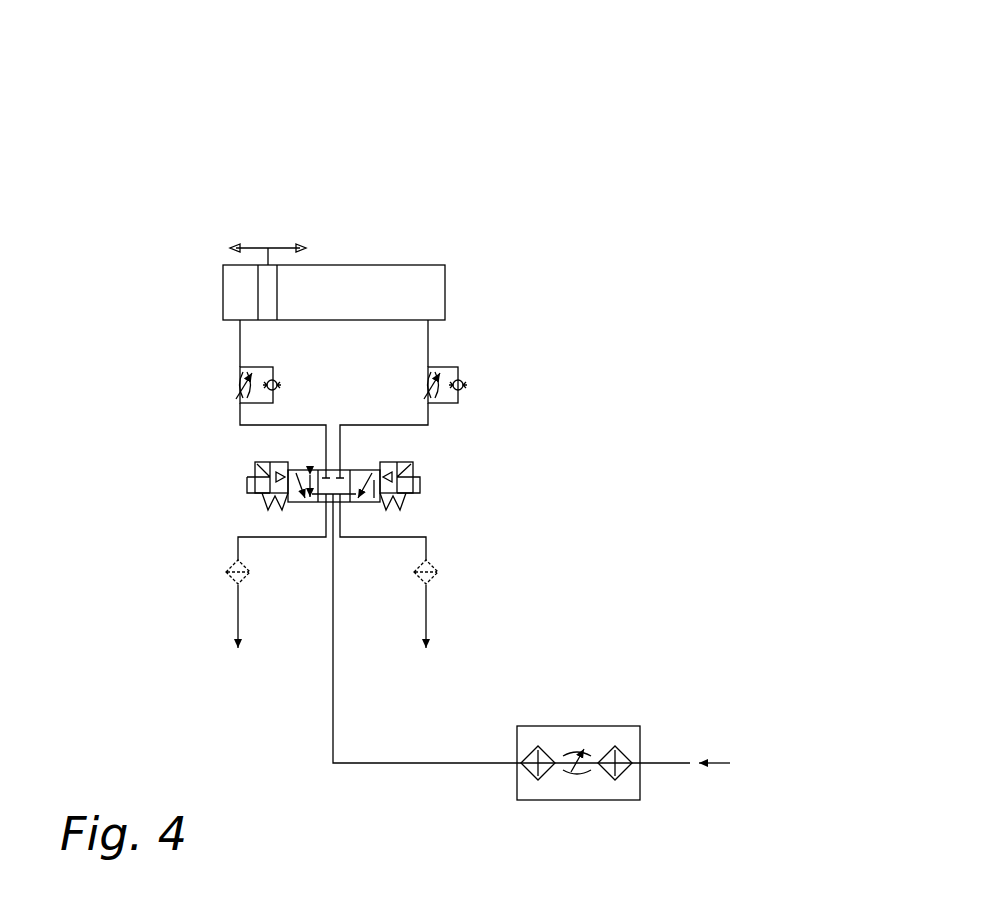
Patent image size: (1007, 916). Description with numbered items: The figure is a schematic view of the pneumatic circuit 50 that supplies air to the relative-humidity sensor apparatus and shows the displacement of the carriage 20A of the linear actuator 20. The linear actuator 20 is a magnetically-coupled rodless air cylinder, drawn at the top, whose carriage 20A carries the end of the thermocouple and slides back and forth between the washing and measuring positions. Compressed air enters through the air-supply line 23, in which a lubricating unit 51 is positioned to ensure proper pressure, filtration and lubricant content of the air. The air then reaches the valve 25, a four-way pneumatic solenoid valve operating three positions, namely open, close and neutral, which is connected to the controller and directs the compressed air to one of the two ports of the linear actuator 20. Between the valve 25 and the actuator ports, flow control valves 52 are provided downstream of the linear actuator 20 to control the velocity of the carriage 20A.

The linear actuator 20 is at (274, 166).
The carriage 20A is at (262, 292).
The flow control valves 52 is at (210, 382).
The valve 25 is at (244, 480).
The pneumatic circuit 50 is at (649, 563).
The lubricating unit 51 is at (652, 717).
The air-supply line 23 is at (325, 639).